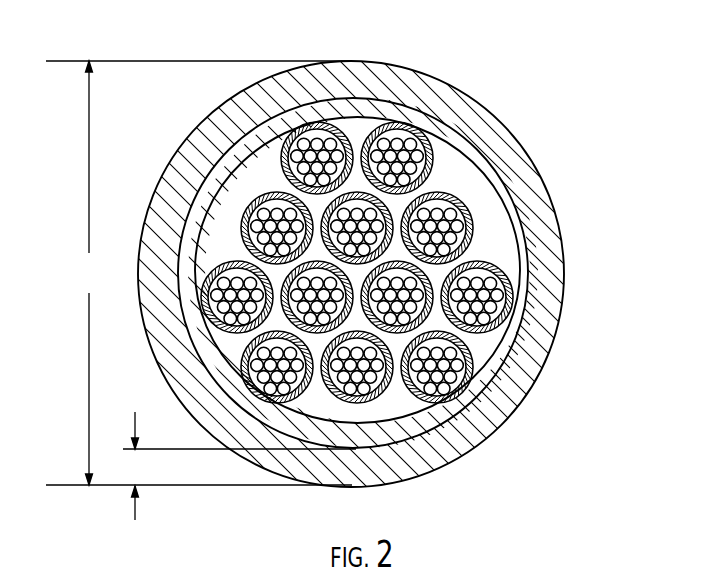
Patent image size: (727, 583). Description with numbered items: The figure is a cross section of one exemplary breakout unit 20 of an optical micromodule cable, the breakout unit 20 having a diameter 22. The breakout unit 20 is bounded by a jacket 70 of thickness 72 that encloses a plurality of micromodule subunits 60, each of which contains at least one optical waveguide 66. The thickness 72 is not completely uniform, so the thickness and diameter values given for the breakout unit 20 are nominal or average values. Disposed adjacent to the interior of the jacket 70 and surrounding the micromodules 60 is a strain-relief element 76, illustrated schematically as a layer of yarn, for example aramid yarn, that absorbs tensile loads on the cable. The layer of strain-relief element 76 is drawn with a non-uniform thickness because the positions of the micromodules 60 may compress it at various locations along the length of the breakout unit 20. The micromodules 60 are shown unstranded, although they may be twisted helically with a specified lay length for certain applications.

The breakout unit 20 is at (664, 36).
The diameter 22 is at (199, 273).
The micromodule subunit 60 is at (593, 223).
The optical waveguide 66 is at (563, 428).
The jacket 70 is at (517, 65).
The thickness 72 is at (239, 466).
The strain-relief element 76 is at (567, 138).